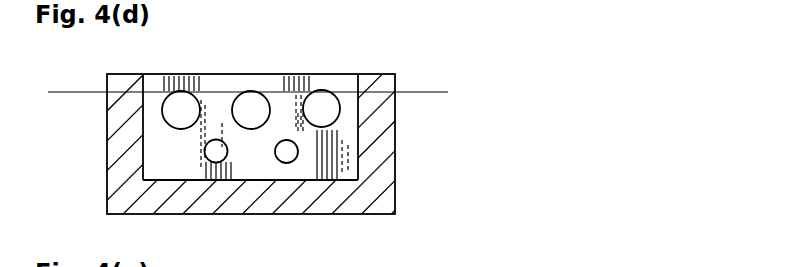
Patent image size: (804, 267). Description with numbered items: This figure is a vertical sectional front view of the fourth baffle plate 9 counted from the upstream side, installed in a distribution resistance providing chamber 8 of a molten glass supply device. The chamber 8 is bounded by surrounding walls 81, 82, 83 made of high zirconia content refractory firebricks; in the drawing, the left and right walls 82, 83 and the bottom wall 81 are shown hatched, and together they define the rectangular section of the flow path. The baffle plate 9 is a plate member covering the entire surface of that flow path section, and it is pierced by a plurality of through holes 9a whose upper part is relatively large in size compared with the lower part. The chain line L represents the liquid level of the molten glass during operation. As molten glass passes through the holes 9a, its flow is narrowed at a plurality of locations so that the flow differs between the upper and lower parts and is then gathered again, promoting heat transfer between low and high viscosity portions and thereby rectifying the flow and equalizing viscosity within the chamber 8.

The distribution resistance providing chamber 8 is at (267, 169).
The surrounding wall 81 is at (317, 210).
The surrounding wall 82 is at (113, 152).
The surrounding wall 83 is at (397, 186).
The baffle plate 9 is at (342, 80).
The through hole 9a is at (218, 142).
The chain line L is at (152, 92).